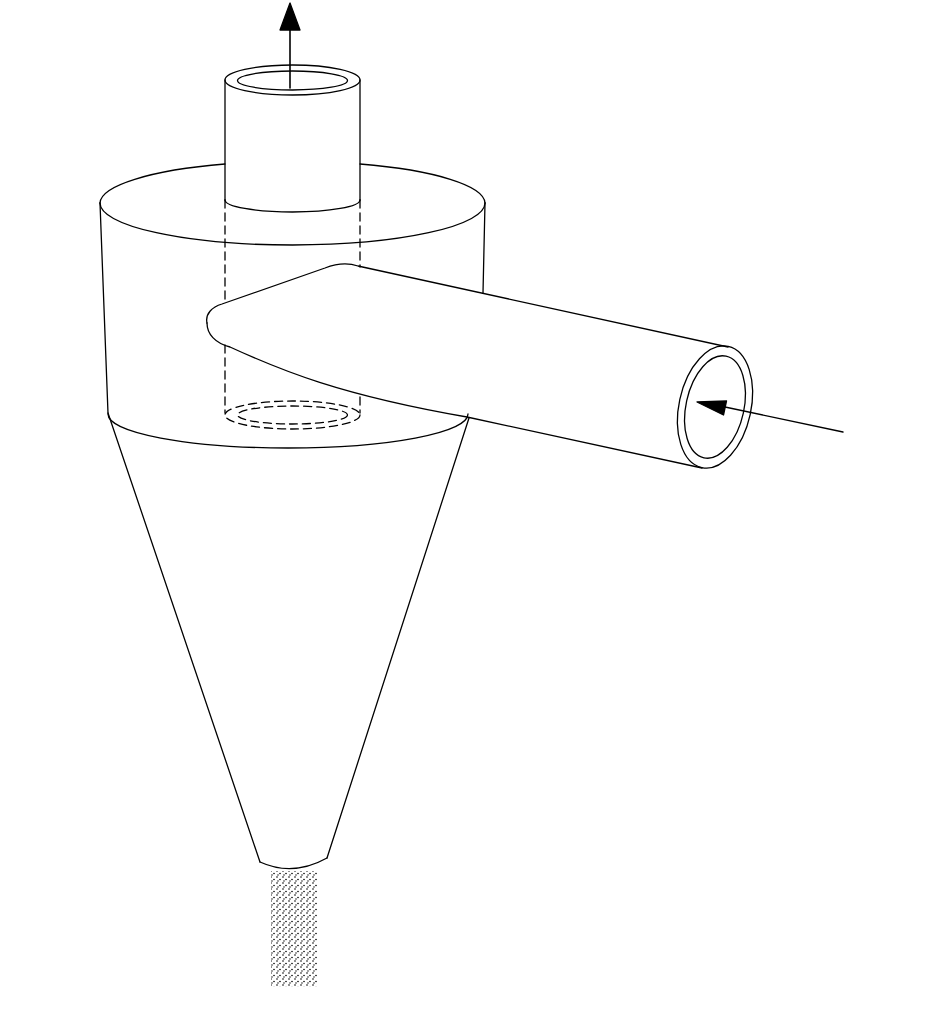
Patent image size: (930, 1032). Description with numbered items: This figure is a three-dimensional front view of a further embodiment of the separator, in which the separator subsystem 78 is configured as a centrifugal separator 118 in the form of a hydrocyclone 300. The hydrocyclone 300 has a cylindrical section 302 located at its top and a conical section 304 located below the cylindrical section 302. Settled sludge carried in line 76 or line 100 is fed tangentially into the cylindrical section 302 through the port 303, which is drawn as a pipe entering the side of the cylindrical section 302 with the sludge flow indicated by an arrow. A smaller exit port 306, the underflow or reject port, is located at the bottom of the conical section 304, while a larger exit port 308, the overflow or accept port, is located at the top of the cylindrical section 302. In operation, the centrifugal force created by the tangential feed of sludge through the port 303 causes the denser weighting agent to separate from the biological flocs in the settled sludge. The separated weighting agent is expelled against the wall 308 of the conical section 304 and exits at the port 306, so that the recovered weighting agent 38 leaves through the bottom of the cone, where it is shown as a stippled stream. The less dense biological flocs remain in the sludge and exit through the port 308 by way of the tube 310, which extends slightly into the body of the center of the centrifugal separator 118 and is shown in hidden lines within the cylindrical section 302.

The separator subsystem 78 is at (548, 67).
The hydrocyclone 300 is at (446, 162).
The centrifugal separator 118 is at (537, 173).
The cylindrical section 302 is at (483, 238).
The tube 310 is at (223, 268).
The exit port 308 is at (338, 68).
The conical section 304 is at (444, 579).
The exit port 306 is at (320, 868).
The port 303 is at (485, 369).
The line 76 is at (485, 369).
The line 100 is at (665, 340).
The weighting agent 38 is at (317, 957).